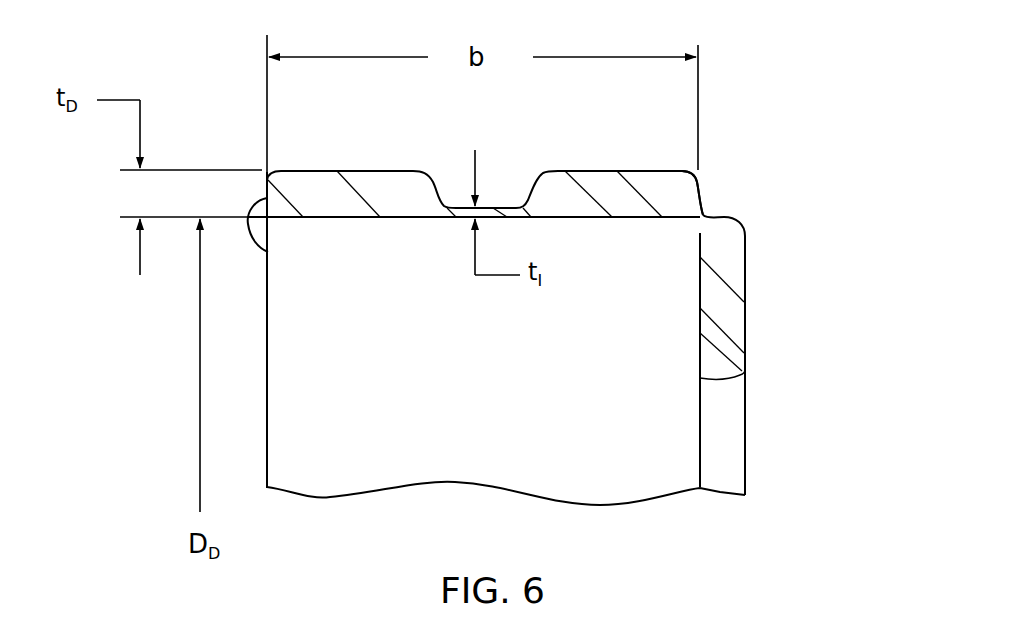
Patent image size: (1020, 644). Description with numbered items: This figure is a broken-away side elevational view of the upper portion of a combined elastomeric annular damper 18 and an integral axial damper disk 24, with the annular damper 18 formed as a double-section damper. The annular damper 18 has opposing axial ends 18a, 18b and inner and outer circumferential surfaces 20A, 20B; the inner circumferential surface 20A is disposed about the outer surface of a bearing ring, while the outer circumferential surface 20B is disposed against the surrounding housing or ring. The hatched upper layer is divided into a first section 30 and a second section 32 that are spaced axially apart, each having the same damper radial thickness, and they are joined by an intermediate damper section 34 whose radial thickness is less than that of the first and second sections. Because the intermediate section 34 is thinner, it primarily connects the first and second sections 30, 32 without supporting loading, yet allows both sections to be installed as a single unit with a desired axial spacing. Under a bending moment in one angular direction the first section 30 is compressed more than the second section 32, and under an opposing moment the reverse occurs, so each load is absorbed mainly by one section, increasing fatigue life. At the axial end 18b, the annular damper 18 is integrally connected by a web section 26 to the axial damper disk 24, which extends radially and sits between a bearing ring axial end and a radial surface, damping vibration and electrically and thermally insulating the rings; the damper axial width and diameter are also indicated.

The elastomeric annular damper 18 is at (257, 152).
The axial end 18a is at (268, 252).
The axial end 18b is at (704, 196).
The inner circumferential surface 20A is at (612, 218).
The outer circumferential surface 20B is at (397, 170).
The elastomeric axial damper disk 24 is at (791, 305).
The web section 26 is at (703, 214).
The first section 30 is at (353, 169).
The second section 32 is at (612, 169).
The intermediate damper section 34 is at (506, 204).